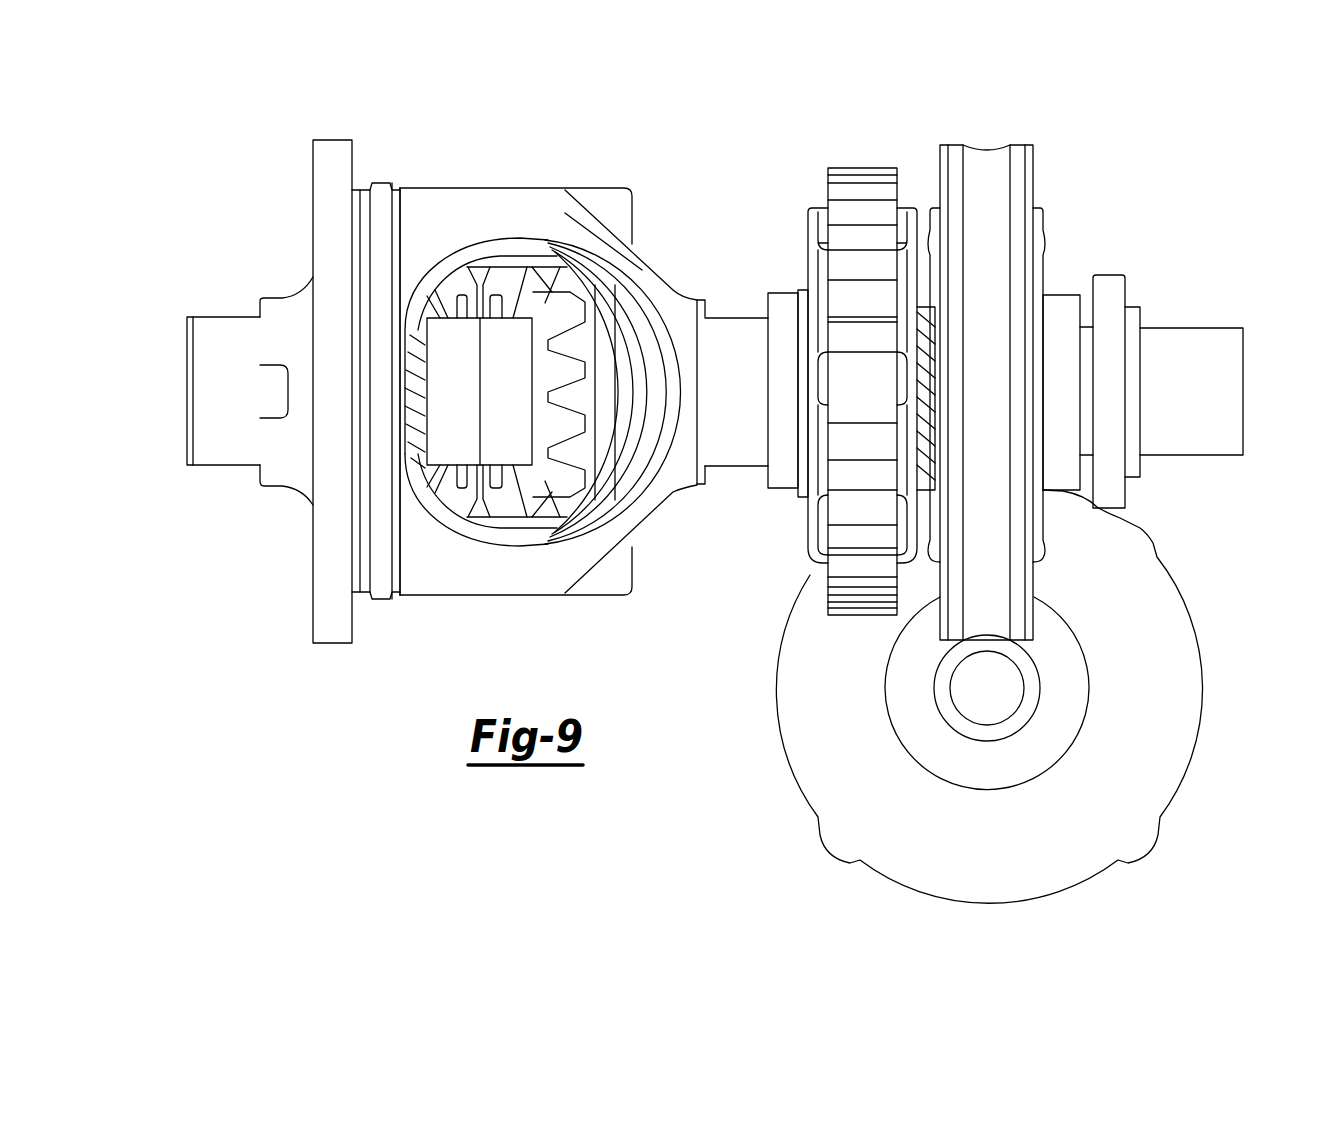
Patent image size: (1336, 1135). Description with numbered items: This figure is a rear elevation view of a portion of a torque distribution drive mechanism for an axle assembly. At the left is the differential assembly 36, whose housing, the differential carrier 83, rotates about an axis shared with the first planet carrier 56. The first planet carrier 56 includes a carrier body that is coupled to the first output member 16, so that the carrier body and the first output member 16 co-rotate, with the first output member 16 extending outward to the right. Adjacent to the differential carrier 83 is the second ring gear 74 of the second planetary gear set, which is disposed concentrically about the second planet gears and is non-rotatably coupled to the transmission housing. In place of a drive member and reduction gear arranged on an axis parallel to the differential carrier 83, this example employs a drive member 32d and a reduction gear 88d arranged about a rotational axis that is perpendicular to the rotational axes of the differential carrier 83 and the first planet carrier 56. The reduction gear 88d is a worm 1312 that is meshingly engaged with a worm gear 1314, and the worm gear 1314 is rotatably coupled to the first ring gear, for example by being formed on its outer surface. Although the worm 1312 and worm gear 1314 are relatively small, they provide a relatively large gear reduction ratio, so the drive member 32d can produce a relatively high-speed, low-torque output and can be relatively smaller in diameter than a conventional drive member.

The differential assembly 36 is at (511, 173).
The differential carrier 83 is at (433, 583).
The second ring gear 74 is at (858, 178).
The worm gear 1314 is at (987, 156).
The first planet carrier 56 is at (1040, 255).
The first output member 16 is at (1218, 332).
The worm 1312 is at (1033, 688).
The reduction gear 88d is at (1022, 713).
The drive member 32d is at (1180, 751).